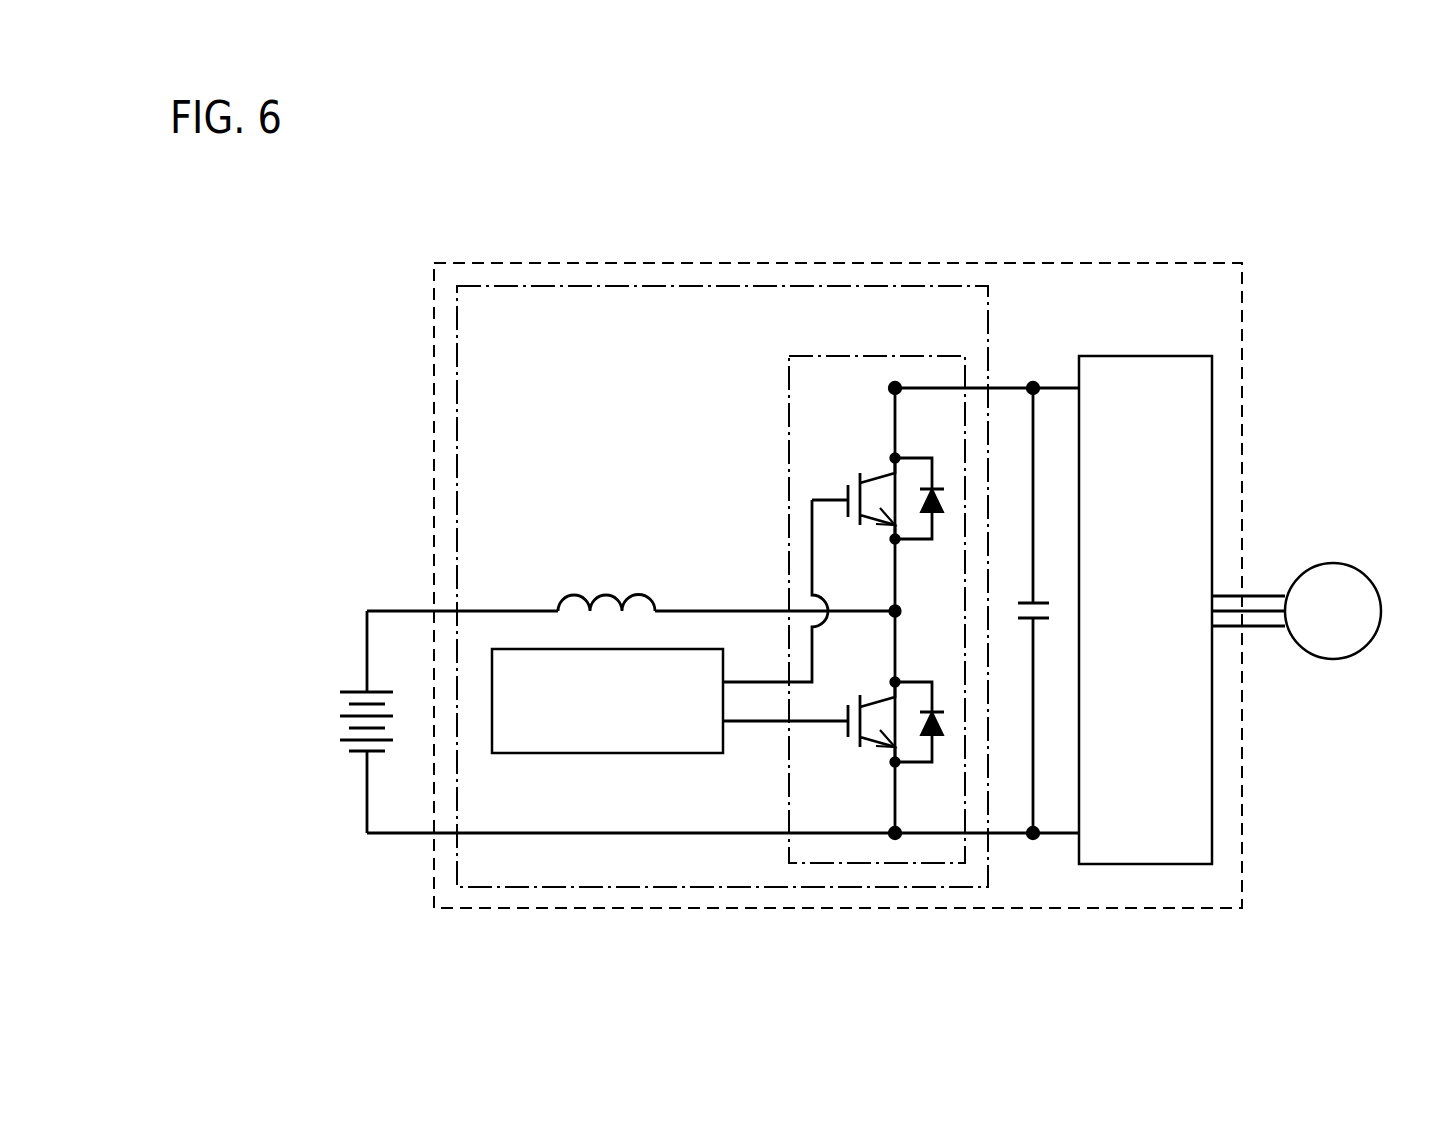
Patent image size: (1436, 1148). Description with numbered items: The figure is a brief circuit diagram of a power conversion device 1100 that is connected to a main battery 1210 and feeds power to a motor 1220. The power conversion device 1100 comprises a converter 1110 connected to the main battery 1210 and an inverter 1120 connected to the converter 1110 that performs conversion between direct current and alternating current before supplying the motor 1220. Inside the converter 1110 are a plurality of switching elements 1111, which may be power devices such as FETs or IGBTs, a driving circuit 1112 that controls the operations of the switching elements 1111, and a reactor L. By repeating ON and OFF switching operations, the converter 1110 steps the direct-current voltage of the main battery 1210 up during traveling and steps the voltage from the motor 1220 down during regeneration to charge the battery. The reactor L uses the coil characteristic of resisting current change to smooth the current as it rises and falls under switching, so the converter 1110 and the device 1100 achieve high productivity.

The power conversion device 1100 is at (434, 322).
The converter 1110 is at (988, 310).
The switching elements 1111 is at (852, 478).
The driving circuit 1112 is at (533, 756).
The inverter 1120 is at (1183, 356).
The main battery 1210 is at (340, 705).
The motor 1220 is at (1358, 565).
The reactor L is at (640, 594).